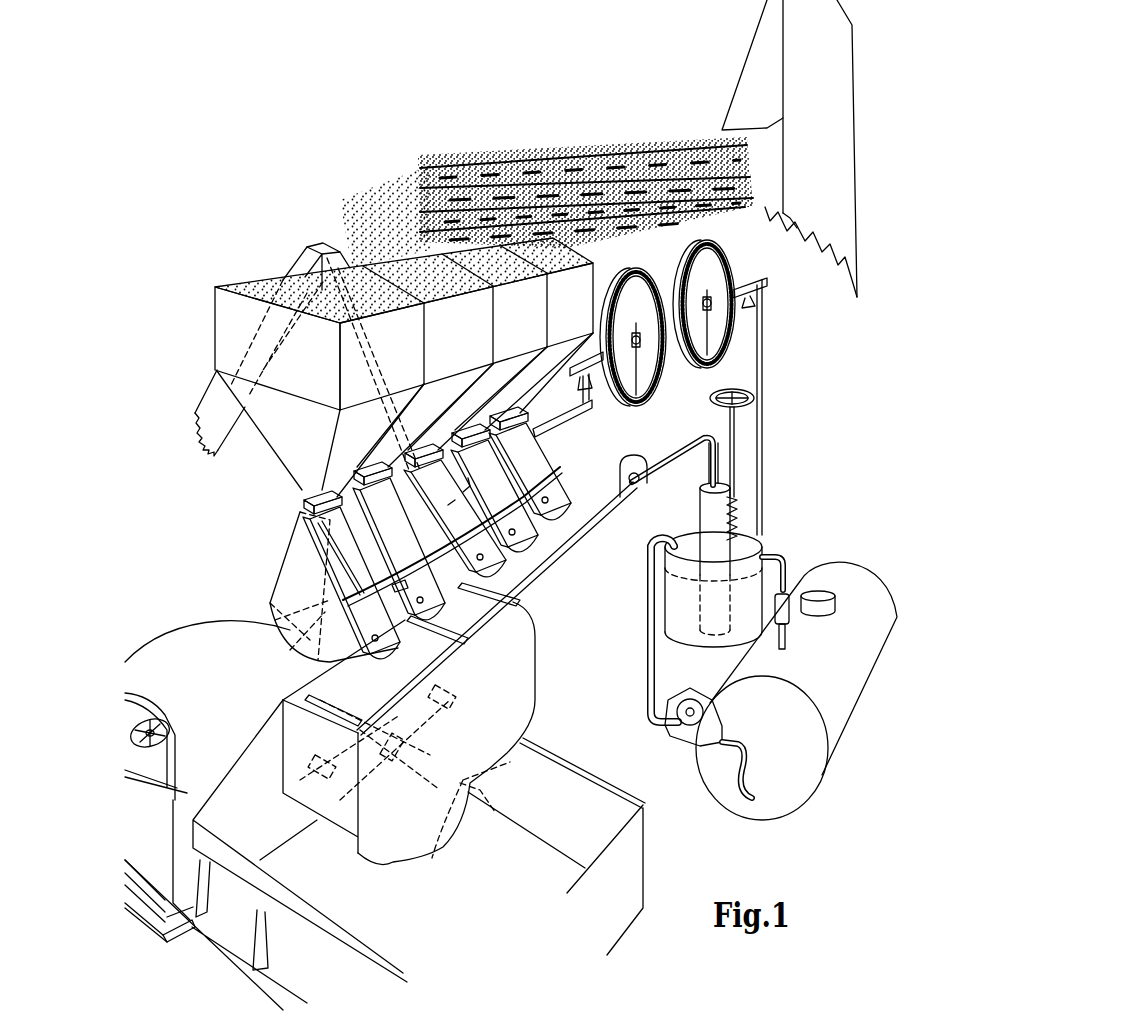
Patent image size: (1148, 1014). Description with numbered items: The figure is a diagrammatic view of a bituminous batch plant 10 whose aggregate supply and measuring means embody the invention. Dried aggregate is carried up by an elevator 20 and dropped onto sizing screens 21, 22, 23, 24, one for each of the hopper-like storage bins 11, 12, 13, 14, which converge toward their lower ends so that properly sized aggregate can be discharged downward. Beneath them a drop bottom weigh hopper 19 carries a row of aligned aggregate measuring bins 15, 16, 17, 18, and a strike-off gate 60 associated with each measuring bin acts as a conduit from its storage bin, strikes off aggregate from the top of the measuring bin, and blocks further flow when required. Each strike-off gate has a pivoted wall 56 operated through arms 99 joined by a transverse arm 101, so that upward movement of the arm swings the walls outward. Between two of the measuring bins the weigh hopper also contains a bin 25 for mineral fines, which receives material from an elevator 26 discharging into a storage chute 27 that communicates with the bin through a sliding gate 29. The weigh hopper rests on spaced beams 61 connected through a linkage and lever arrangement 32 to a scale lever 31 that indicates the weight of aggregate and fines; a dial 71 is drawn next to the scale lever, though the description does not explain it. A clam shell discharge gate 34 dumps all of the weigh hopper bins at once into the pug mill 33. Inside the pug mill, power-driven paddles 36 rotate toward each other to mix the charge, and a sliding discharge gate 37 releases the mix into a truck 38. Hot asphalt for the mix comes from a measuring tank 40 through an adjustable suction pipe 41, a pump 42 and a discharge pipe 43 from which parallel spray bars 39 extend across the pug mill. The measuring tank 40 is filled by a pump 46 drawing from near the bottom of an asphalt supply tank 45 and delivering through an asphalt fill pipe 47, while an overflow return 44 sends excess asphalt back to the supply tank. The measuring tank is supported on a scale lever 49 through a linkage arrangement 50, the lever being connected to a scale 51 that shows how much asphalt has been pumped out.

The bituminous batch plant 10 is at (240, 238).
The storage bin 11 is at (578, 321).
The storage bin 12 is at (528, 330).
The storage bin 13 is at (472, 341).
The storage bin 14 is at (412, 343).
The aggregate measuring bin 15 is at (562, 506).
The aggregate measuring bin 16 is at (530, 530).
The aggregate measuring bin 17 is at (440, 608).
The aggregate measuring bin 18 is at (388, 645).
The drop bottom weigh hopper 19 is at (548, 450).
The elevator 20 is at (857, 155).
The sizing screen 21 is at (423, 168).
The sizing screen 22 is at (423, 188).
The sizing screen 23 is at (424, 212).
The sizing screen 24 is at (428, 231).
The mineral fines bin 25 is at (498, 568).
The elevator 26 is at (212, 400).
The storage chute 27 is at (340, 242).
The sliding gate 29 is at (468, 494).
The scale lever 31 is at (580, 368).
The linkage and lever arrangement 32 is at (589, 400).
The pug mill 33 is at (395, 868).
The clam shell discharge gate 34 is at (283, 665).
The paddles 36 is at (522, 670).
The sliding discharge gate 37 is at (478, 825).
The truck 38 is at (645, 867).
The spray bars 39 is at (525, 625).
The measuring tank 40 is at (765, 548).
The suction pipe 41 is at (706, 504).
The pump 42 is at (655, 462).
The discharge pipe 43 is at (575, 552).
The overflow return 44 is at (790, 565).
The asphalt supply tank 45 is at (845, 705).
The pump 46 is at (688, 718).
The asphalt fill pipe 47 is at (647, 646).
The scale lever 49 is at (757, 278).
The linkage arrangement 50 is at (762, 392).
The scale 51 is at (693, 275).
The pivoted wall 56 is at (395, 505).
The strike-off gate 60 is at (304, 506).
The beam 61 is at (556, 418).
The gauge 71 is at (655, 393).
The arms 99 is at (356, 560).
The transverse arm 101 is at (398, 580).